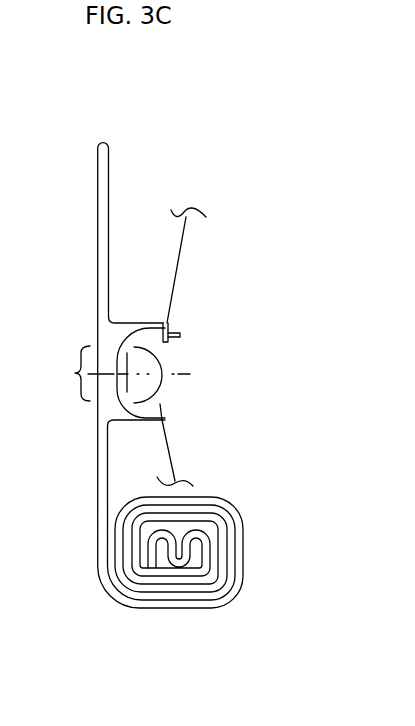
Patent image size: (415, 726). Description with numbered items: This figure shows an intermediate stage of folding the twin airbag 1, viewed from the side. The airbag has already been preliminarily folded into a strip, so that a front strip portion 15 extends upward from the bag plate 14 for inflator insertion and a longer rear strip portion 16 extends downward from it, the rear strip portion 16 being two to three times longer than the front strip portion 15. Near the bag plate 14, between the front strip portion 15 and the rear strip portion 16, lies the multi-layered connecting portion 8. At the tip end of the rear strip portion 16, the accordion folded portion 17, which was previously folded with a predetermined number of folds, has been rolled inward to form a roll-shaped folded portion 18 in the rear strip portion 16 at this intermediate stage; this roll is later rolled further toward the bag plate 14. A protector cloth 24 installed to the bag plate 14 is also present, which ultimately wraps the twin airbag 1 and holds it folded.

The twin airbag 1 is at (106, 132).
The front strip portion 15 is at (96, 243).
The rear strip portion 16 is at (97, 516).
The multi-layered connecting portion 8 is at (74, 374).
The bag plate 14 is at (186, 353).
The protector cloth 24 is at (176, 278).
The roll-shaped folded portion 18 is at (243, 550).
The accordion folded portion 17 is at (203, 566).